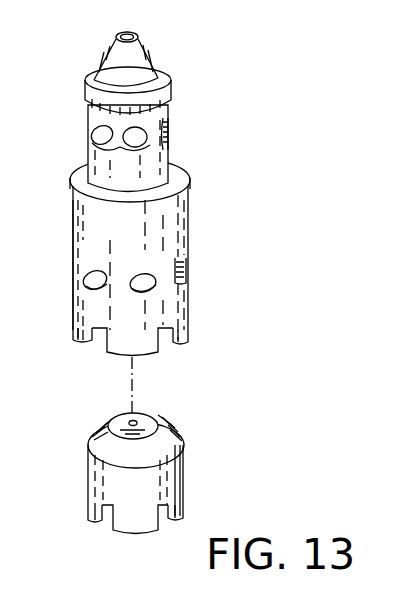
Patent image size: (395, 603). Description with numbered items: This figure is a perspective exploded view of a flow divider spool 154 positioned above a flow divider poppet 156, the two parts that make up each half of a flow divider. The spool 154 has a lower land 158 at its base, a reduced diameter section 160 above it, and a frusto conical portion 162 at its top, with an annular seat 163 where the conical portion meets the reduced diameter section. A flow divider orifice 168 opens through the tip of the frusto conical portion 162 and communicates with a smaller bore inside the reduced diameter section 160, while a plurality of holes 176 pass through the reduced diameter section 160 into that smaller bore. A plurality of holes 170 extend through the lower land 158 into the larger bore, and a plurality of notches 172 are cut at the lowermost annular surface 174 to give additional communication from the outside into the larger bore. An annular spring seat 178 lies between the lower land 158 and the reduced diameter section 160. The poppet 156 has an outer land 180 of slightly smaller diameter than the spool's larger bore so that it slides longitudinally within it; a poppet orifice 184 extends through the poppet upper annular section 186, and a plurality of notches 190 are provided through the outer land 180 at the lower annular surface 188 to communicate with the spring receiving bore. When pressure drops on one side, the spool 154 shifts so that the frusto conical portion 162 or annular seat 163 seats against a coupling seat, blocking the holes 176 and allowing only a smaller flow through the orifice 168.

The flow divider spool 154 is at (144, 262).
The flow divider poppet 156 is at (140, 478).
The lower land 158 is at (80, 220).
The reduced diameter section 160 is at (131, 145).
The frusto conical portion 162 is at (136, 45).
The annular seat 163 is at (95, 74).
The flow divider orifice 168 is at (120, 33).
The holes 170 is at (88, 279).
The notches 172 is at (78, 334).
The lowermost annular surface 174 is at (180, 350).
The holes 176 is at (97, 133).
The annular spring seat 178 is at (80, 172).
The outer land 180 is at (88, 470).
The poppet orifice 184 is at (137, 424).
The poppet upper annular section 186 is at (105, 433).
The lower annular surface 188 is at (135, 532).
The notches 190 is at (95, 512).